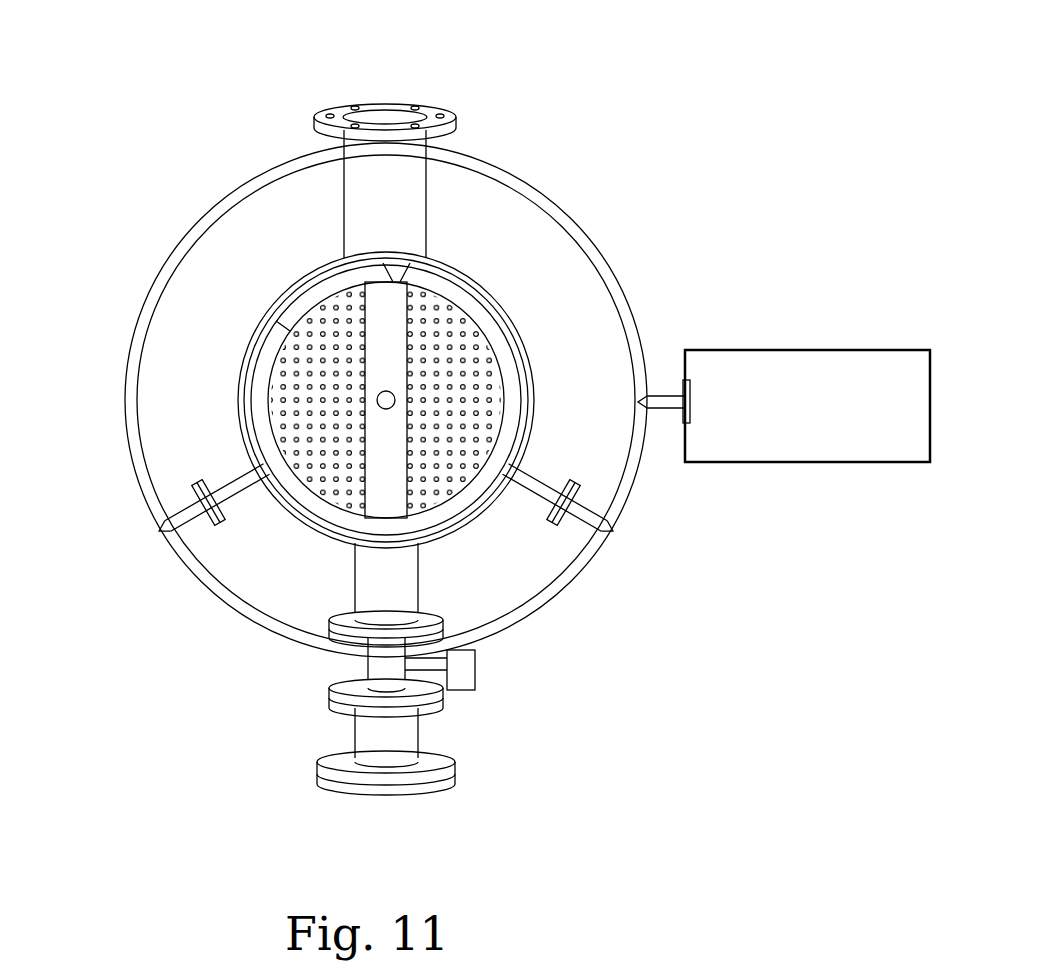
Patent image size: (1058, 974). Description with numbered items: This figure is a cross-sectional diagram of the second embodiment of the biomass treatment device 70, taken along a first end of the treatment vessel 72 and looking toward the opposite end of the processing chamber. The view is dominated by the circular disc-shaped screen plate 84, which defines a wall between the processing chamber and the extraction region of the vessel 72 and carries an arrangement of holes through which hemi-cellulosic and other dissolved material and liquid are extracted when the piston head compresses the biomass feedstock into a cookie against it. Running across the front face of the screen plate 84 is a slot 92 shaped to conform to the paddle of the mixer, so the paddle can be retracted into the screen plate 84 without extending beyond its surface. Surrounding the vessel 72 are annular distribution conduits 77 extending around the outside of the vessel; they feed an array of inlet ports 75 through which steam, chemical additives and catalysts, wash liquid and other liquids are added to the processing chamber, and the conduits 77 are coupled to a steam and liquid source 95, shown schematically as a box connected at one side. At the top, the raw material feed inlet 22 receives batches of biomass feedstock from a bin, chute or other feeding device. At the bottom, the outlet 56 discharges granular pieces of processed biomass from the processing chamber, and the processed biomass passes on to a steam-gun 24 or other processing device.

The biomass treatment device 70 is at (110, 183).
The raw material feed inlet 22 is at (379, 85).
The annular distribution conduits 77 is at (262, 175).
The treatment vessel 72 is at (452, 270).
The screen plate 84 is at (443, 350).
The inlet ports 75 is at (236, 486).
The slot 92 is at (390, 488).
The outlet 56 is at (407, 594).
The steam-gun 24 is at (360, 732).
The sources 95 is at (823, 462).